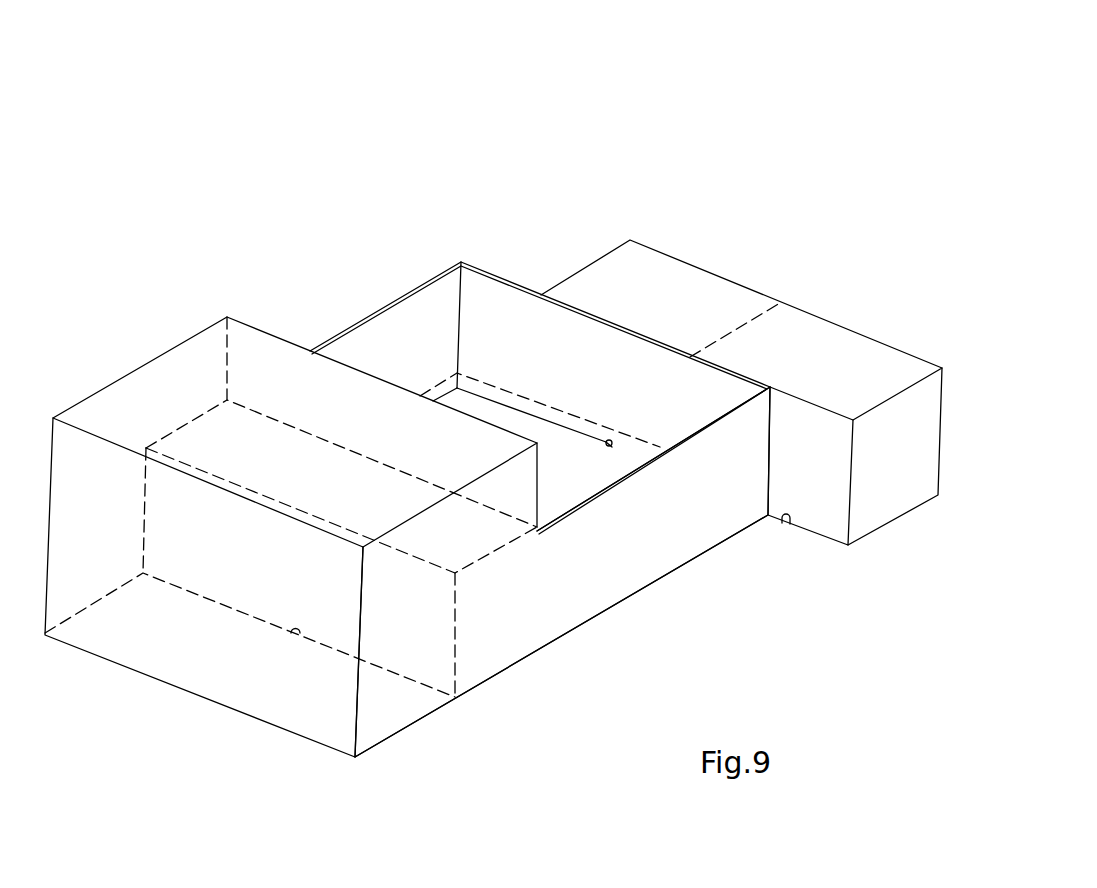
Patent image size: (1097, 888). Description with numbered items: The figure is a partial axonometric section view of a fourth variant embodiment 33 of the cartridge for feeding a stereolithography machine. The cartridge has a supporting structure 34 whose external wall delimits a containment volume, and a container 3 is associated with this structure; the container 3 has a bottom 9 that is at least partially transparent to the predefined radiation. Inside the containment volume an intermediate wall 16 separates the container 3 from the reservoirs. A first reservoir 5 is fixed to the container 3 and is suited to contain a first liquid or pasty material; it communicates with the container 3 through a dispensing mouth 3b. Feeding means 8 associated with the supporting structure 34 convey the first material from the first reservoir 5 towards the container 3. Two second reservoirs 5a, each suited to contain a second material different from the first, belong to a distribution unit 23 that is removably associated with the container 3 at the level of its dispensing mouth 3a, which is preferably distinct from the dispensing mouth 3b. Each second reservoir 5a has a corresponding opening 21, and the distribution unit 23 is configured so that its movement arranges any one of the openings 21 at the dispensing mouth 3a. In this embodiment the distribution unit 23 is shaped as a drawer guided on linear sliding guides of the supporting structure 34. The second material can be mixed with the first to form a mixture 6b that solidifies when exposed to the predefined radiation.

The container 3 is at (486, 310).
The dispensing mouth 3a is at (613, 438).
The dispensing mouth 3b is at (296, 638).
The first reservoir 5 is at (292, 393).
The second reservoir 5a is at (753, 289).
The mixture 6b is at (553, 404).
The feeding means 8 is at (616, 453).
The bottom 9 is at (622, 604).
The intermediate wall 16 is at (433, 616).
The opening 21 is at (786, 527).
The distribution unit 23 is at (887, 329).
The variant embodiment of the cartridge 33 is at (774, 134).
The supporting structure 34 is at (397, 296).